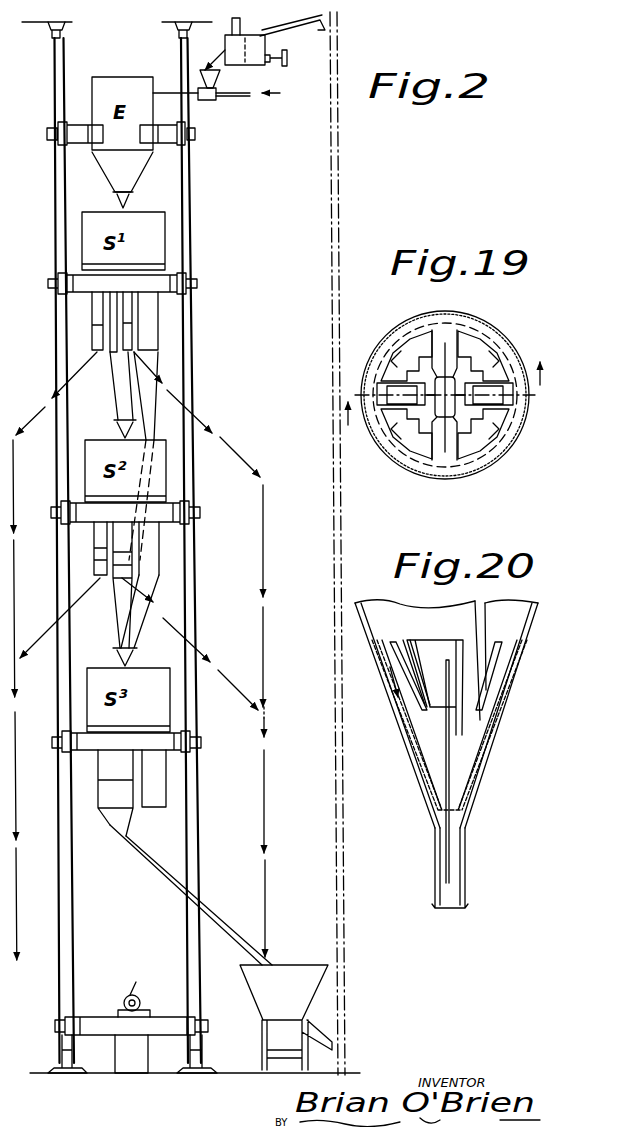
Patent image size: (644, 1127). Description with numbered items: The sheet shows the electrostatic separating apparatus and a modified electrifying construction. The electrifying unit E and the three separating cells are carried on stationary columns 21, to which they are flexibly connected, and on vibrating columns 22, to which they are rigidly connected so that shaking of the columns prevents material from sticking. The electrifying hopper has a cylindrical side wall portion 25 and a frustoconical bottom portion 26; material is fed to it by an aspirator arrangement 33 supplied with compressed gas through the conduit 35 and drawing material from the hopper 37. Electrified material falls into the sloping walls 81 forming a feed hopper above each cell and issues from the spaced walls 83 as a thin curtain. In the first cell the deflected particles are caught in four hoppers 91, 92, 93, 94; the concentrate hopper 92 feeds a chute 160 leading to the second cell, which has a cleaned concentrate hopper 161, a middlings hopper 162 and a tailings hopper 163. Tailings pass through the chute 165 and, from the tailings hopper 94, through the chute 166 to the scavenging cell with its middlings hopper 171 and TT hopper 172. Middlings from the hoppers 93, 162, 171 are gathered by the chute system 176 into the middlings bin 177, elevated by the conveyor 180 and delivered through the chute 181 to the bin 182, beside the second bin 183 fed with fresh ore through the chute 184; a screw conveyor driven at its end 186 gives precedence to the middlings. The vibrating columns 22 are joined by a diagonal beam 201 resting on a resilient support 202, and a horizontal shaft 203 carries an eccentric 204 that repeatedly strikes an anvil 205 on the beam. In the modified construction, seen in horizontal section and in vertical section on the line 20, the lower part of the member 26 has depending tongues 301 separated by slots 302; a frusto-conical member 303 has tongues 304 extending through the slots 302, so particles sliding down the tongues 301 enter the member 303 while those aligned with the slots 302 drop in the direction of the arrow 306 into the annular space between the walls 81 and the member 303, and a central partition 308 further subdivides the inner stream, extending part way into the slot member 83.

In FIG. 2, the stationary columns 21 is at (53, 66).
In FIG. 2, the vibrating columns 22 is at (64, 180).
In FIG. 2, the cylindrical side wall portion 25 is at (38, 407).
In FIG. 2, the frustoconical bottom portion 26 is at (140, 175).
In FIG. 20, the frustoconical bottom portion 26 is at (372, 603).
In FIG. 2, the sloping walls 81 is at (131, 204).
In FIG. 19, the sloping walls 81 is at (380, 448).
In FIG. 20, the sloping walls 81 is at (400, 725).
In FIG. 2, the aspirator arrangement 33 is at (210, 100).
In FIG. 2, the conduit 35 is at (250, 98).
In FIG. 2, the hopper 37 is at (220, 80).
In FIG. 2, the hopper 91 is at (92, 310).
In FIG. 2, the concentrate hopper 92 is at (110, 326).
In FIG. 2, the middlings hopper 93 is at (132, 332).
In FIG. 2, the tailings hopper 94 is at (158, 315).
In FIG. 2, the chute 160 is at (113, 388).
In FIG. 2, the cleaned concentrate hopper 161 is at (94, 566).
In FIG. 2, the middlings hopper 162 is at (118, 590).
In FIG. 2, the tailings hopper 163 is at (159, 556).
In FIG. 2, the chute 165 is at (150, 590).
In FIG. 2, the chute 166 is at (150, 398).
In FIG. 2, the middlings hopper 171 is at (115, 793).
In FIG. 2, the TT hopper 172 is at (156, 812).
In FIG. 2, the chute system 176 is at (228, 456).
In FIG. 2, the middlings bin 177 is at (286, 1017).
In FIG. 2, the conveyor 180 is at (282, 716).
In FIG. 2, the chute 181 is at (328, 42).
In FIG. 2, the bin 182 is at (250, 50).
In FIG. 2, the second bin 183 is at (222, 40).
In FIG. 2, the chute 184 is at (241, 22).
In FIG. 2, the screw conveyor end 186 is at (276, 64).
In FIG. 2, the diagonal beam 201 is at (84, 1015).
In FIG. 2, the resilient support 202 is at (133, 1062).
In FIG. 2, the horizontal shaft 203 is at (140, 998).
In FIG. 2, the eccentric 204 is at (147, 979).
In FIG. 2, the anvil 205 is at (148, 1012).
In FIG. 19, the section line 20 is at (440, 381).
In FIG. 19, the spaced walls 83 is at (436, 382).
In FIG. 20, the spaced walls 83 is at (465, 880).
In FIG. 19, the depending tongues 301 is at (388, 388).
In FIG. 20, the depending tongues 301 is at (480, 715).
In FIG. 19, the slots 302 is at (478, 345).
In FIG. 20, the slots 302 is at (435, 681).
In FIG. 19, the frusto-conical sheet metal member 303 is at (465, 455).
In FIG. 20, the frusto-conical sheet metal member 303 is at (470, 770).
In FIG. 19, the tongues 304 is at (420, 445).
In FIG. 20, the tongues 304 is at (395, 645).
In FIG. 20, the arrow 306 is at (382, 628).
In FIG. 19, the central partition 308 is at (449, 345).
In FIG. 20, the central partition 308 is at (447, 765).